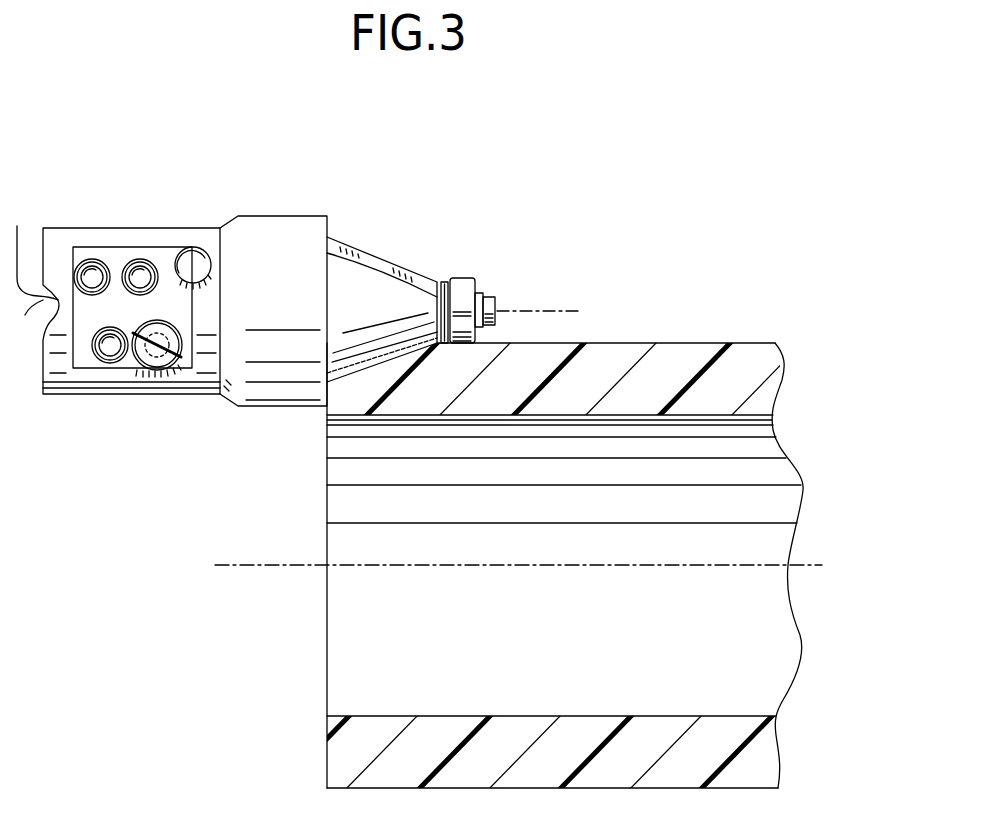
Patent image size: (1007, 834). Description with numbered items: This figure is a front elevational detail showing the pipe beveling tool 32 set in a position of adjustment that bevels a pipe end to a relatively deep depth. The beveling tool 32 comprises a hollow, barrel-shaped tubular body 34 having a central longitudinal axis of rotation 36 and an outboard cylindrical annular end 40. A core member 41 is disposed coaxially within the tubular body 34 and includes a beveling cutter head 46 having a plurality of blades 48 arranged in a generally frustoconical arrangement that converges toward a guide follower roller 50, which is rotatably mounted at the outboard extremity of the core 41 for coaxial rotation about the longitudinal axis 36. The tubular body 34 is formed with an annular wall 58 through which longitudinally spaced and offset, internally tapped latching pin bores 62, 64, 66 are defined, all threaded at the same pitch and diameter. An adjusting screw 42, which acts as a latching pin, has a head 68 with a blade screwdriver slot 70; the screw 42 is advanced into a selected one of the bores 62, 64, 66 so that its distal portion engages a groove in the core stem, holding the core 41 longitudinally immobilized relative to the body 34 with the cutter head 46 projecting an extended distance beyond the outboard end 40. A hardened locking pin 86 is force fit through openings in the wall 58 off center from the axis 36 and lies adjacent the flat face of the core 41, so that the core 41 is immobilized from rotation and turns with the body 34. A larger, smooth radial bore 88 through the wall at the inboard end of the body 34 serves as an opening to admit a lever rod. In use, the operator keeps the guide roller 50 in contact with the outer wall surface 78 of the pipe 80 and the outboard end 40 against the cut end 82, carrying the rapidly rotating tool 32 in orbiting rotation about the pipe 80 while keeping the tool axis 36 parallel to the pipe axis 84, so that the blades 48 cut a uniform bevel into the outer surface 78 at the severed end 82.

The pipe beveling tool 32 is at (134, 138).
The tubular body 34 is at (250, 182).
The longitudinal axis of rotation 36 is at (560, 306).
The outboard cylindrical annular end 40 is at (329, 233).
The core member 41 is at (441, 252).
The adjusting screw 42 is at (134, 372).
The beveling cutter head 46 is at (370, 252).
The blades 48 is at (393, 263).
The guide follower roller 50 is at (470, 280).
The annular wall 58 is at (170, 228).
The latching pin bore 62 is at (142, 268).
The latching pin bore 64 is at (94, 342).
The latching pin bore 66 is at (90, 268).
The head 68 is at (157, 362).
The blade screwdriver slot 70 is at (167, 345).
The outer wall surface 78 is at (645, 343).
The pipe 80 is at (712, 300).
The cut end 82 is at (327, 756).
The pipe axis 84 is at (255, 568).
The hardened locking pin 86 is at (197, 250).
The radial bore 88 is at (30, 257).